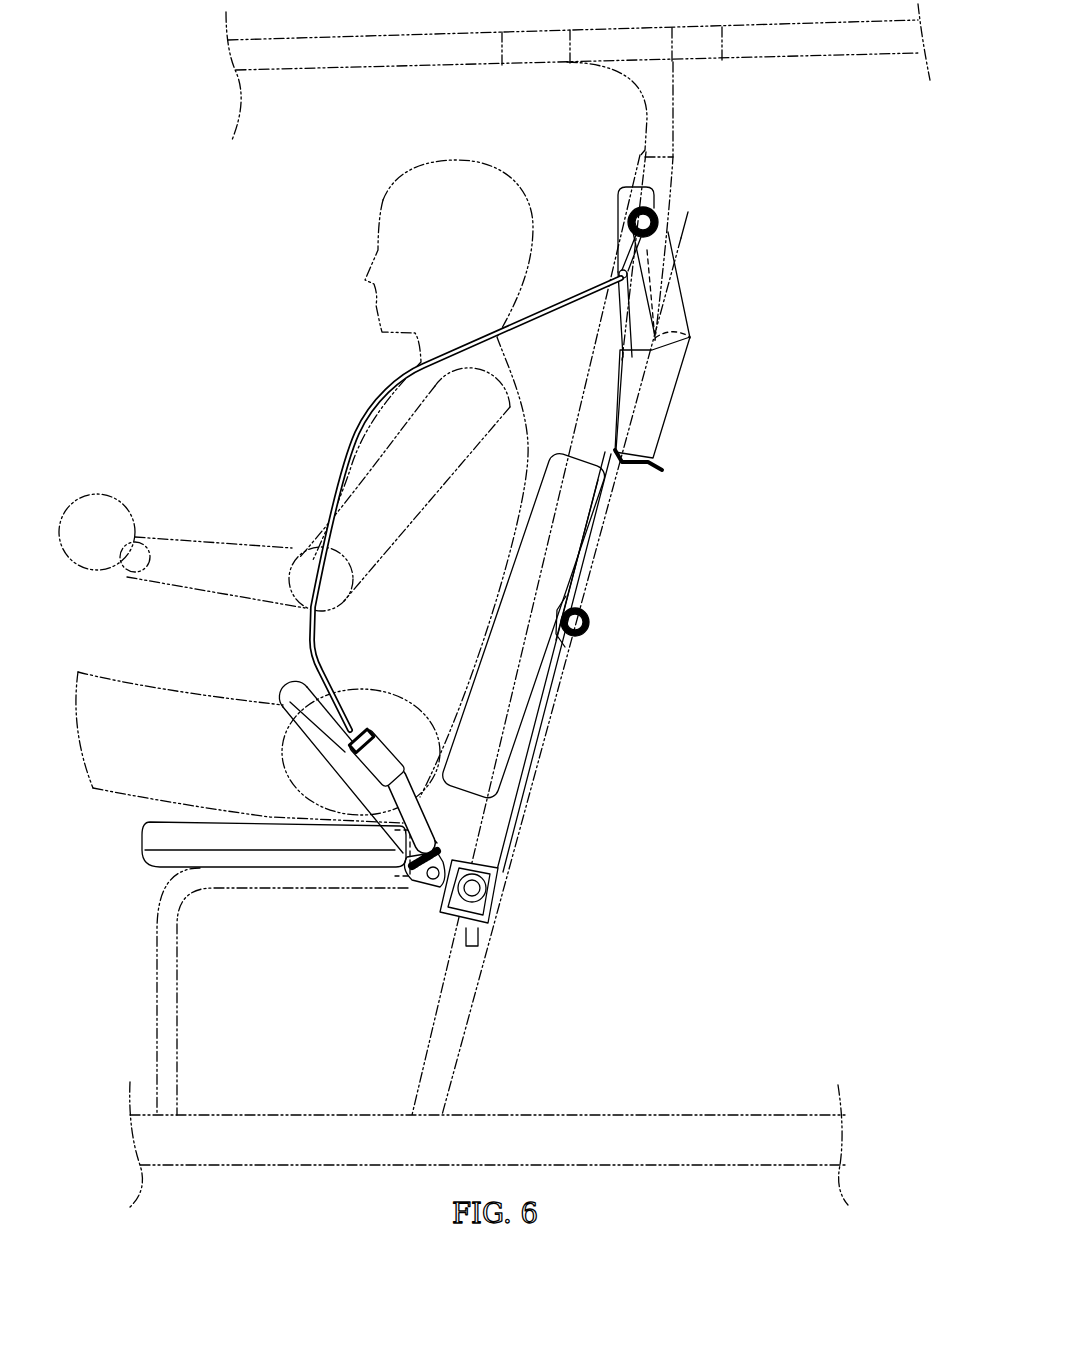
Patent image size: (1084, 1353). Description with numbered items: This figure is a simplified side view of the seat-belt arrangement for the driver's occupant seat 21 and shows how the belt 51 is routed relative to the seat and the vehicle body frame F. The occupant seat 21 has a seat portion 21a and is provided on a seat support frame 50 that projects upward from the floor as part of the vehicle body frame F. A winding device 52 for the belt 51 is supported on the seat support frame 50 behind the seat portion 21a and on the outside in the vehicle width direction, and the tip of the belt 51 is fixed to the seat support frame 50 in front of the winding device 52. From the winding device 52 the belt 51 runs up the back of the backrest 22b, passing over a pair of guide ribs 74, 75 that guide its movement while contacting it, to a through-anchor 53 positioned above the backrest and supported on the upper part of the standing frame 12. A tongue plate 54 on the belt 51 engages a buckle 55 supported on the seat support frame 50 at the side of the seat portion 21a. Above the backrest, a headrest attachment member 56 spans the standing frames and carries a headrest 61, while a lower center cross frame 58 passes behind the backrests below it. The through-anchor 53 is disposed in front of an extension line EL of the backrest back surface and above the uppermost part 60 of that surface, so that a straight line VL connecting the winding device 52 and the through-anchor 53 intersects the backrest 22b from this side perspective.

The standing frame 12 is at (668, 165).
The occupant seat 21 is at (236, 873).
The seat portion 21a is at (160, 833).
The backrest 22b is at (503, 680).
The seat support frame 50 is at (160, 1020).
The belt 51 is at (343, 447).
The winding device 52 is at (497, 872).
The through-anchor 53 is at (615, 248).
The tongue plate 54 is at (368, 738).
The buckle 55 is at (383, 755).
The headrest attachment member 56 is at (668, 378).
The lower center cross frame 58 is at (590, 624).
The uppermost part 60 is at (618, 470).
The headrest 61 is at (628, 188).
The guide rib 74 is at (585, 565).
The guide rib 75 is at (603, 513).
The vehicle body frame F is at (627, 1110).
The extension line EL is at (683, 241).
The straight line VL is at (546, 600).